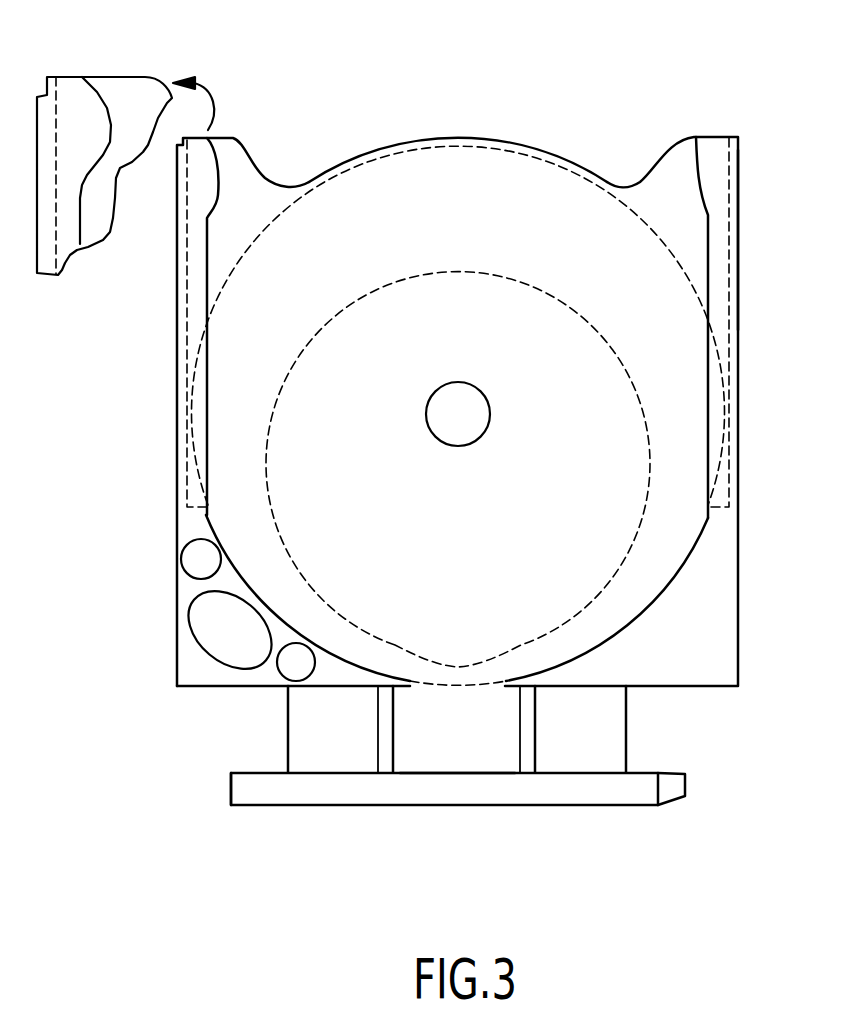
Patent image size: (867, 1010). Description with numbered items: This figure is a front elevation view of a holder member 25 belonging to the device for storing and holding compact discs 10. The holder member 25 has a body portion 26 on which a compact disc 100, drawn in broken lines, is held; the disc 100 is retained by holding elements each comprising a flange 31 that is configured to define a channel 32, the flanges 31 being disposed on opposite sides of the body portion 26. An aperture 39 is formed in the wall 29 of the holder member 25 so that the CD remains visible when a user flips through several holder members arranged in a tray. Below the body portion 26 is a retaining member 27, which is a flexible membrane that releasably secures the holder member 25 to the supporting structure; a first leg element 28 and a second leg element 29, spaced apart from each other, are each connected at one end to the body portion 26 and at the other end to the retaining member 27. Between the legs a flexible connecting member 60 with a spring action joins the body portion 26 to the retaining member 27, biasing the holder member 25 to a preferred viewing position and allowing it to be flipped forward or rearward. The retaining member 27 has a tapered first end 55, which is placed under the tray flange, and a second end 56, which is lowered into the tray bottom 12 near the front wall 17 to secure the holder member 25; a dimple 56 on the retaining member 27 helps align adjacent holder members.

The device for storing and holding compact discs 10 is at (498, 132).
The bottom 12 is at (318, 213).
The compact disc 100 is at (430, 147).
The holder member 25 is at (741, 261).
The body portion 26 is at (738, 203).
The retaining member 27 is at (640, 771).
The first leg element 28 is at (613, 730).
The second leg element 29 is at (240, 176).
The flange 31 is at (206, 163).
The channel 32 is at (729, 172).
The aperture 39 is at (638, 408).
The retaining member first end 55 is at (688, 778).
The second end of the retaining member 56 is at (231, 785).
The flexible connecting member 60 is at (460, 760).
The front wall 17 is at (385, 765).